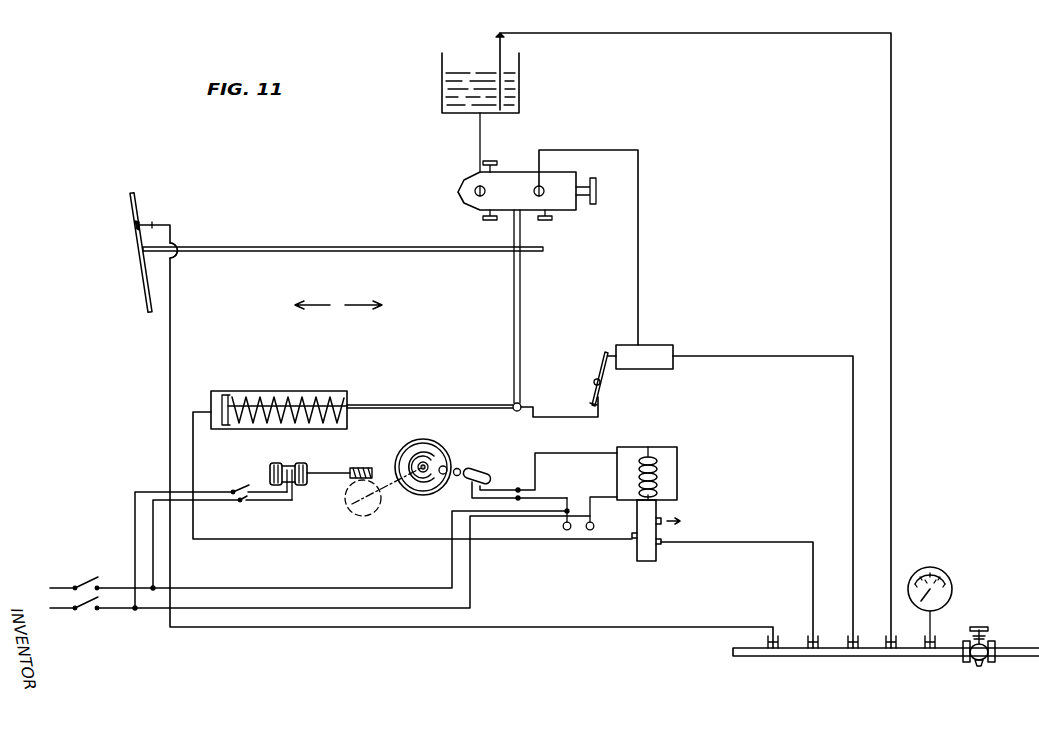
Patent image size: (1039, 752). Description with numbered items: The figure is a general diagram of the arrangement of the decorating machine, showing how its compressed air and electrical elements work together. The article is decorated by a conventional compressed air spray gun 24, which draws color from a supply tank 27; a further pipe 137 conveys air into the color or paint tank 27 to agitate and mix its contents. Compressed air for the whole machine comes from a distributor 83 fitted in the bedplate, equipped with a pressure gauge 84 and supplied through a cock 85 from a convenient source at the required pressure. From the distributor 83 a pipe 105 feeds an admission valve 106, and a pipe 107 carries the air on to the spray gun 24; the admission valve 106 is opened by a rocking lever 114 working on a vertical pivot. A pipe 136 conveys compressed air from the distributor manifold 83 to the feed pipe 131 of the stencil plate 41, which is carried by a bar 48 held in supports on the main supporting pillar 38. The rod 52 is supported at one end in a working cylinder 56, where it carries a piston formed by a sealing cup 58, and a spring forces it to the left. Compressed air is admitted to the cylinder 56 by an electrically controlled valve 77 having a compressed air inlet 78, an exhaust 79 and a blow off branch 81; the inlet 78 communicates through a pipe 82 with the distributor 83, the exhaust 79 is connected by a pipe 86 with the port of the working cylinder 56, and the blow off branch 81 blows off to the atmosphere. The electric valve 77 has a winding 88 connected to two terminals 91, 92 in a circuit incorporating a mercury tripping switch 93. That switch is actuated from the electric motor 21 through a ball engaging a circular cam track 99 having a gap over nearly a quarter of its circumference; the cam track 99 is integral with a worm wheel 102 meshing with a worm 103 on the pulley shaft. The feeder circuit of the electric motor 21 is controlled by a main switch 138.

The electric motor 21 is at (293, 487).
The spray gun 24 is at (511, 182).
The supply tank 27 is at (452, 91).
The main supporting pillar 38 is at (521, 284).
The stencil plate 41 is at (145, 296).
The bar 48 is at (257, 251).
The rod 52 is at (432, 404).
The working cylinder 56 is at (293, 391).
The sealing cup 58 is at (228, 391).
The electric valve 77 is at (677, 458).
The compressed air inlet 78 is at (660, 546).
The compressed air exhaust 79 is at (634, 541).
The blow off branch 81 is at (664, 521).
The pipe 82 is at (765, 549).
The compressed air distributor 83 is at (752, 652).
The pressure gauge 84 is at (933, 569).
The cock 85 is at (985, 628).
The pipe 86 is at (368, 540).
The winding 88 is at (645, 459).
The terminal 91 is at (565, 531).
The terminal 92 is at (590, 531).
The mercury tripping switch 93 is at (482, 471).
The circular cam track 99 is at (428, 489).
The worm wheel 102 is at (376, 508).
The worm 103 is at (361, 467).
The pipe 105 is at (855, 559).
The admission valve 106 is at (655, 353).
The pipe 107 is at (640, 204).
The rocking lever 114 is at (600, 359).
The feed pipe 131 is at (146, 223).
The pipe 136 is at (174, 348).
The pipe 137 is at (893, 323).
The main switch 138 is at (240, 501).